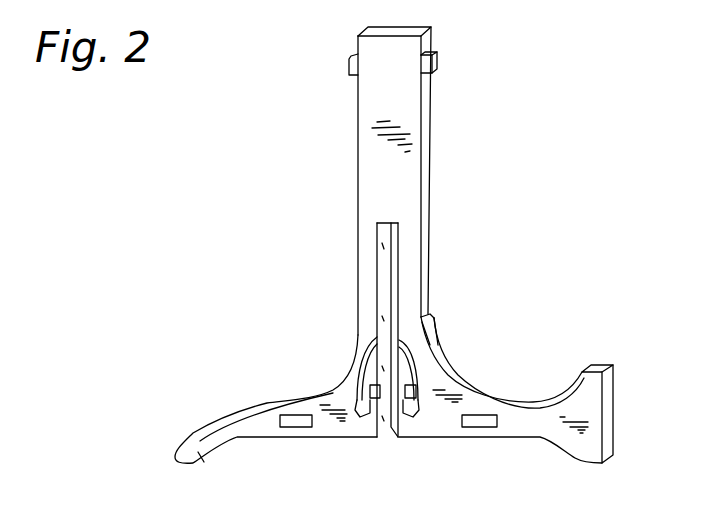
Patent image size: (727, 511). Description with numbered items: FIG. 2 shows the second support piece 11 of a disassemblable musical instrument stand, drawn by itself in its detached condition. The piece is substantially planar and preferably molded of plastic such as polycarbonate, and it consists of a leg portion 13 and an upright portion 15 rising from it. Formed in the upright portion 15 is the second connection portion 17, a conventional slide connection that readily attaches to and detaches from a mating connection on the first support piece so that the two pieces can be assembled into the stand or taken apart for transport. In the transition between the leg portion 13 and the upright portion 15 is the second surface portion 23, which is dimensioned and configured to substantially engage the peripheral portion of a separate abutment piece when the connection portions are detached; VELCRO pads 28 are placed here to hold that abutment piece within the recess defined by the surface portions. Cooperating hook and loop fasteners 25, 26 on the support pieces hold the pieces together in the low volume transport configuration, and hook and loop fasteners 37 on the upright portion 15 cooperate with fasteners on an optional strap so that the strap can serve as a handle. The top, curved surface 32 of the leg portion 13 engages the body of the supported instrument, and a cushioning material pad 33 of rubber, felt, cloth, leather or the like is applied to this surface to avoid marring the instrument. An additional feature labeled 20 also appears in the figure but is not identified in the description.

The second support piece 11 is at (320, 180).
The leg portion 13 is at (585, 405).
The upright portion 15 is at (402, 176).
The second connection portion 17 is at (393, 279).
The side wall of post 20 is at (358, 262).
The second surface portion 23 is at (366, 355).
The hook and loop fastener 25 is at (488, 397).
The hook and loop fastener 26 is at (292, 428).
The VELCRO pads 28 is at (362, 414).
The top curved surface 32 is at (558, 366).
The cushioning material pad 33 is at (462, 380).
The hook and loop fasteners 37 is at (349, 64).